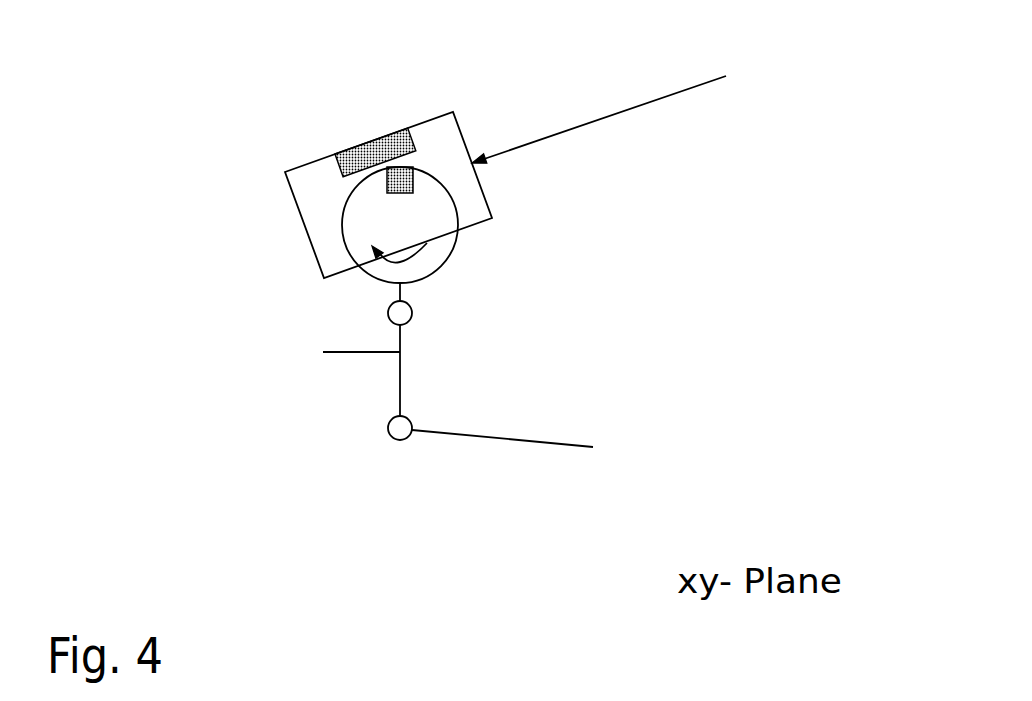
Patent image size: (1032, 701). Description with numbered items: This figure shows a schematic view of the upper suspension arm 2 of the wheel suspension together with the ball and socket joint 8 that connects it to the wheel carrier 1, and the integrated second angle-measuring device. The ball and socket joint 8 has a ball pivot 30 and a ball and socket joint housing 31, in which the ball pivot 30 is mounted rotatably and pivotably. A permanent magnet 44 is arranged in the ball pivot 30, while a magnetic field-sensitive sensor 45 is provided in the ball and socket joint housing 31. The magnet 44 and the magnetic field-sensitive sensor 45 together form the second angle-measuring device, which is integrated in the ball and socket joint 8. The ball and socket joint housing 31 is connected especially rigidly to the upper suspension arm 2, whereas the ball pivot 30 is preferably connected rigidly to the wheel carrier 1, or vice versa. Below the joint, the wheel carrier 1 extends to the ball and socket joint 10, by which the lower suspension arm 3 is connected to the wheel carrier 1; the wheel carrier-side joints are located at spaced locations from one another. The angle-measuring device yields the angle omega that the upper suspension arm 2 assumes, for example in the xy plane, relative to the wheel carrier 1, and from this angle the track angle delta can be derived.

The ball and socket joint 8 is at (196, 152).
The ball and socket joint housing 31 is at (442, 137).
The magnetic field-sensitive sensor 45 is at (372, 150).
The ball pivot 30 is at (373, 218).
The permanent magnet 44 is at (403, 185).
The upper suspension arm 2 is at (635, 108).
The wheel carrier 1 is at (400, 377).
The ball and socket joint 10 is at (398, 428).
The lower suspension arm 3 is at (535, 442).